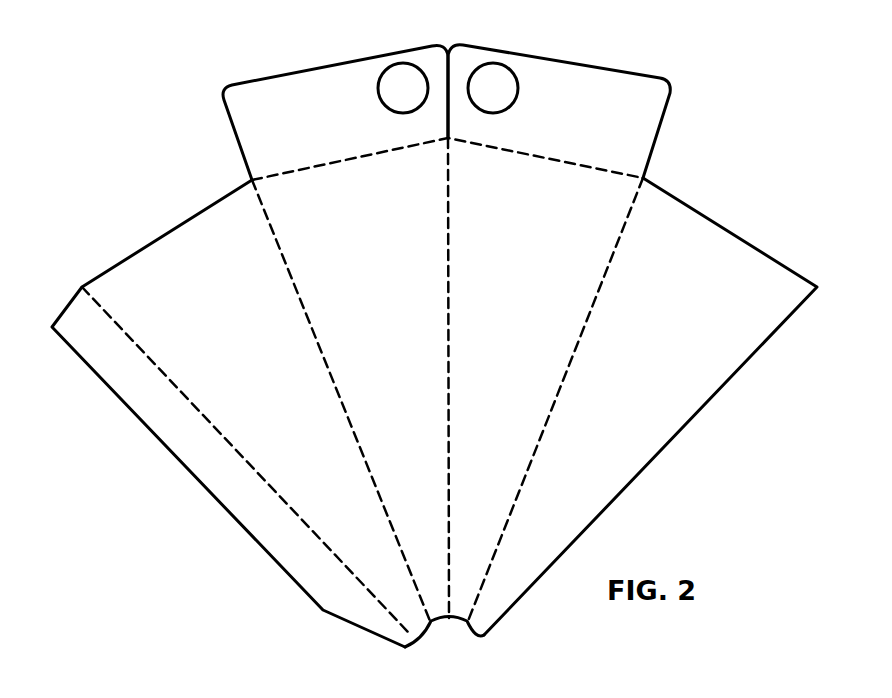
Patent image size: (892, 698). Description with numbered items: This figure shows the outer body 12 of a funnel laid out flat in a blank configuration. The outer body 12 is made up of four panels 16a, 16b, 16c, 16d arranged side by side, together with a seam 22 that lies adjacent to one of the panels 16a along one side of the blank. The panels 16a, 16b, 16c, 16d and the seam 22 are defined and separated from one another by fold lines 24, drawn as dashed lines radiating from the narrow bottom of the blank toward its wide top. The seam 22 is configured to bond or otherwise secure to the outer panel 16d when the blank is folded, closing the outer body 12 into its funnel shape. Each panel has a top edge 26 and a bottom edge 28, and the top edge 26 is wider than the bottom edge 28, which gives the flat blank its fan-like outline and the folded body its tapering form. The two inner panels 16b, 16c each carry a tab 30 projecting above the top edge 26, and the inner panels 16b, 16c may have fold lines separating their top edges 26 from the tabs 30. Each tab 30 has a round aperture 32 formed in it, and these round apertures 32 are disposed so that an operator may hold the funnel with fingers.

The outer body 12 is at (782, 133).
The panel 16a is at (219, 353).
The inner panel 16b is at (357, 266).
The inner panel 16c is at (503, 276).
The outer panel 16d is at (635, 359).
The seam 22 is at (183, 430).
The fold lines 24 is at (288, 173).
The top edge 26 is at (180, 223).
The bottom edge 28 is at (425, 630).
The tab 30 is at (306, 93).
The round aperture 32 is at (404, 92).